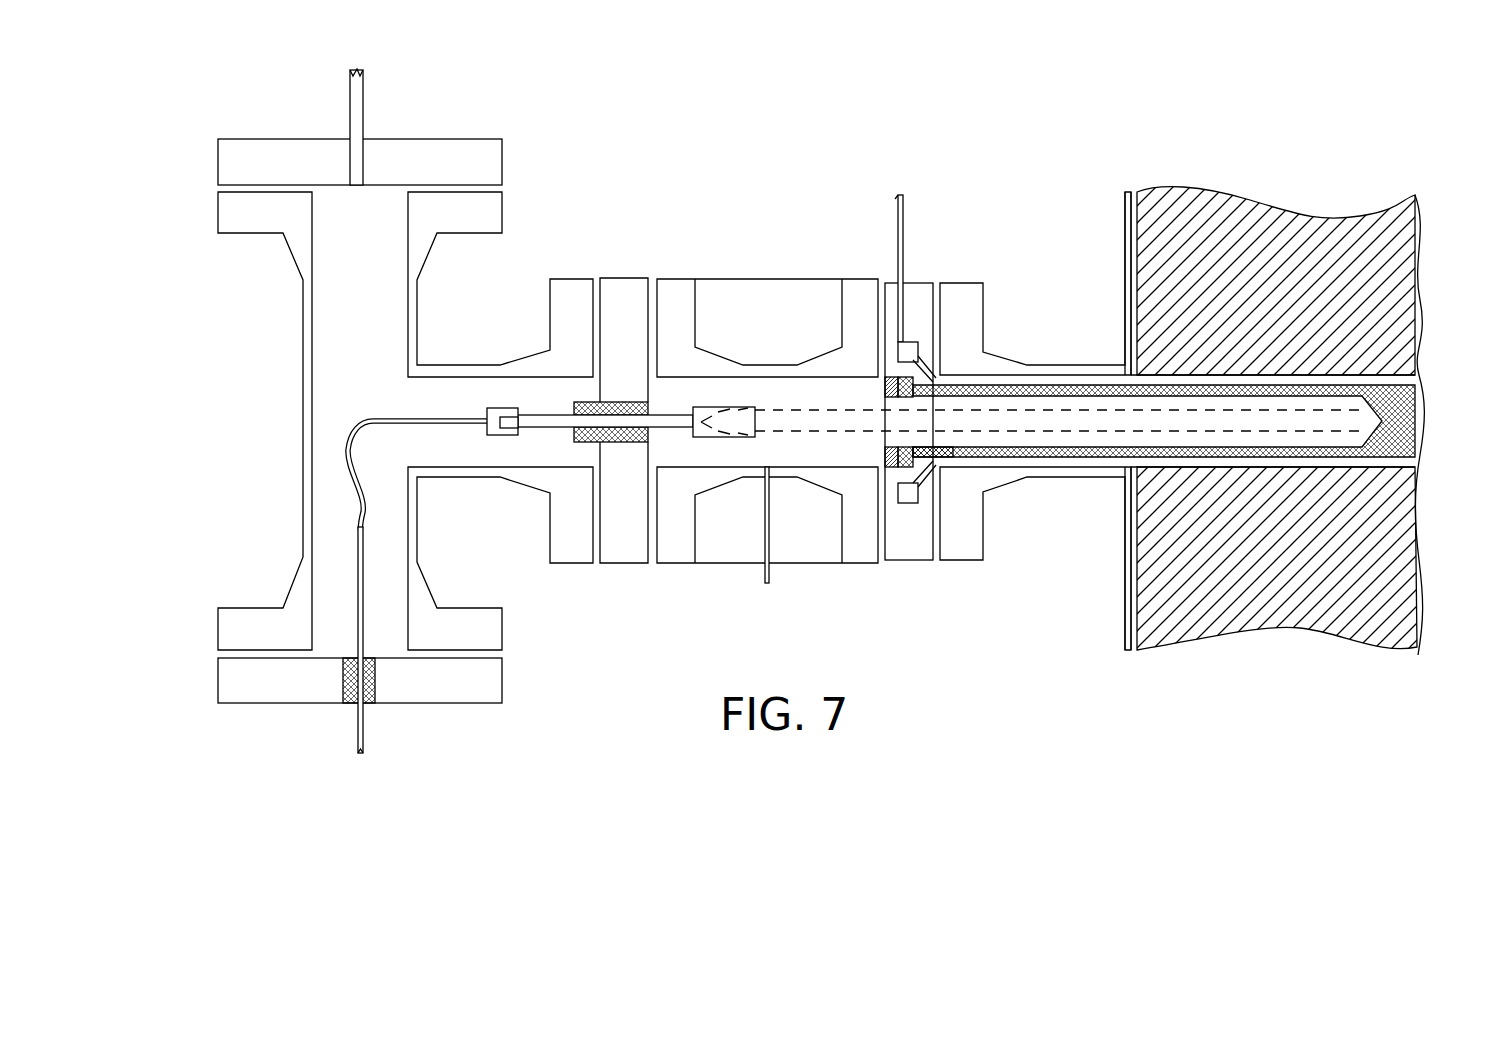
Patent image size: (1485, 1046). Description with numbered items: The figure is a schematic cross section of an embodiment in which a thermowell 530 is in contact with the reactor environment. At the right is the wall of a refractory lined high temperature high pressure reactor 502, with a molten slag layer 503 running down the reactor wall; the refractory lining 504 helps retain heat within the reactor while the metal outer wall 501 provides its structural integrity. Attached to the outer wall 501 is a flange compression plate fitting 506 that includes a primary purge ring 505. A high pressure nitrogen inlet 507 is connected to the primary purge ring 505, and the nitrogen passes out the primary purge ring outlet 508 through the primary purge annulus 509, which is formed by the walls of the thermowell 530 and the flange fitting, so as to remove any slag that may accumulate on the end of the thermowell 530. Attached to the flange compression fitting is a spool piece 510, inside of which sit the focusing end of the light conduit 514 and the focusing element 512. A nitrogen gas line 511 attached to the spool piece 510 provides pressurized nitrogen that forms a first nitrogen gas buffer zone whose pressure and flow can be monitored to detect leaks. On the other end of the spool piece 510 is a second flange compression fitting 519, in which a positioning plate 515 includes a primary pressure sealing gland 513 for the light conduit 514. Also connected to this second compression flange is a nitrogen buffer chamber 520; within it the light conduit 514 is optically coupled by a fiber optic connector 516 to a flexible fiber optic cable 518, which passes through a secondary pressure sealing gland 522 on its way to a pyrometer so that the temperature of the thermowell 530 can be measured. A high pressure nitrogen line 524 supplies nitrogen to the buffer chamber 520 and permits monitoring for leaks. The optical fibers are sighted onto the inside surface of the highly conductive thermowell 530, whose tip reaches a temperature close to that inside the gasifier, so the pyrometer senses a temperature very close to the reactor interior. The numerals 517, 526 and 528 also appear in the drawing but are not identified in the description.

The wall 501 is at (1127, 197).
The refractory lined high temperature high pressure reactor 502 is at (1410, 185).
The molten slag layer 503 is at (1420, 240).
The refractory lining 504 is at (1153, 251).
The primary purge ring 505 is at (910, 288).
The flange compression plate fitting 506 is at (987, 565).
The high pressure nitrogen inlet 507 is at (905, 198).
The primary purge ring outlet 508 is at (927, 362).
The primary purge annulus 509 is at (1025, 383).
The spool piece 510 is at (878, 277).
The nitrogen gas line 511 is at (767, 583).
The focusing element 512 is at (731, 438).
The primary pressure sealing gland 513 is at (625, 400).
The light conduit 514 is at (542, 417).
The positioning plate 515 is at (640, 283).
The fiber optic connector 516 is at (505, 411).
The electrode 517 is at (818, 433).
The flexible fiber optic cable 518 is at (473, 413).
The second flange compression fitting 519 is at (697, 565).
The nitrogen buffer chamber 520 is at (303, 405).
The secondary pressure sealing gland 522 is at (363, 752).
The high pressure nitrogen line 524 is at (357, 117).
The upper clamp 526 is at (210, 139).
The lower clamp 528 is at (210, 608).
The thermowell 530 is at (1085, 458).